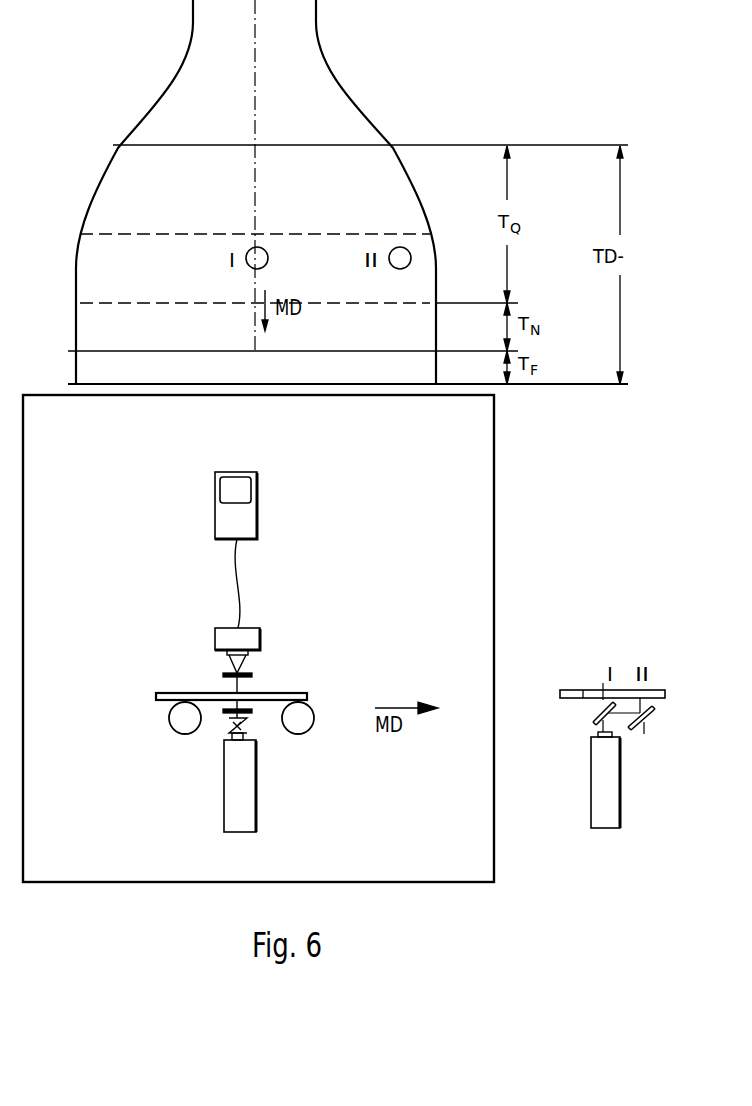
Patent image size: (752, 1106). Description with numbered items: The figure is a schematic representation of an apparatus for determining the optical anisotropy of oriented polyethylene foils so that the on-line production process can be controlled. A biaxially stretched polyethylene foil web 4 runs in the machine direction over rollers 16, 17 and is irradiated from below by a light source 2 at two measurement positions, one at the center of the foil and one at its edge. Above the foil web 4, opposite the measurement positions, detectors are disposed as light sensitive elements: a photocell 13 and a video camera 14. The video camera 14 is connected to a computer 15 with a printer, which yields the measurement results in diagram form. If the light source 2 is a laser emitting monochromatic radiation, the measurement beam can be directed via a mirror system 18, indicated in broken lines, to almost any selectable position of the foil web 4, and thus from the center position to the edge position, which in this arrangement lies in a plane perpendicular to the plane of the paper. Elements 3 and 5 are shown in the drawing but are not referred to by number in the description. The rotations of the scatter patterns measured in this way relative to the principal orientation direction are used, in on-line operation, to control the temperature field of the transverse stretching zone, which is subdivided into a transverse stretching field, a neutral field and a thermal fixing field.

The light source 2 is at (232, 803).
The aperture plate 3 is at (222, 714).
The foil web 4 is at (284, 693).
The aperture plate 5 is at (222, 676).
The photocell 13 is at (268, 622).
The video camera 14 is at (247, 636).
The computer 15 is at (225, 515).
The roller 16 is at (177, 729).
The roller 17 is at (297, 726).
The mirror system 18 is at (248, 727).